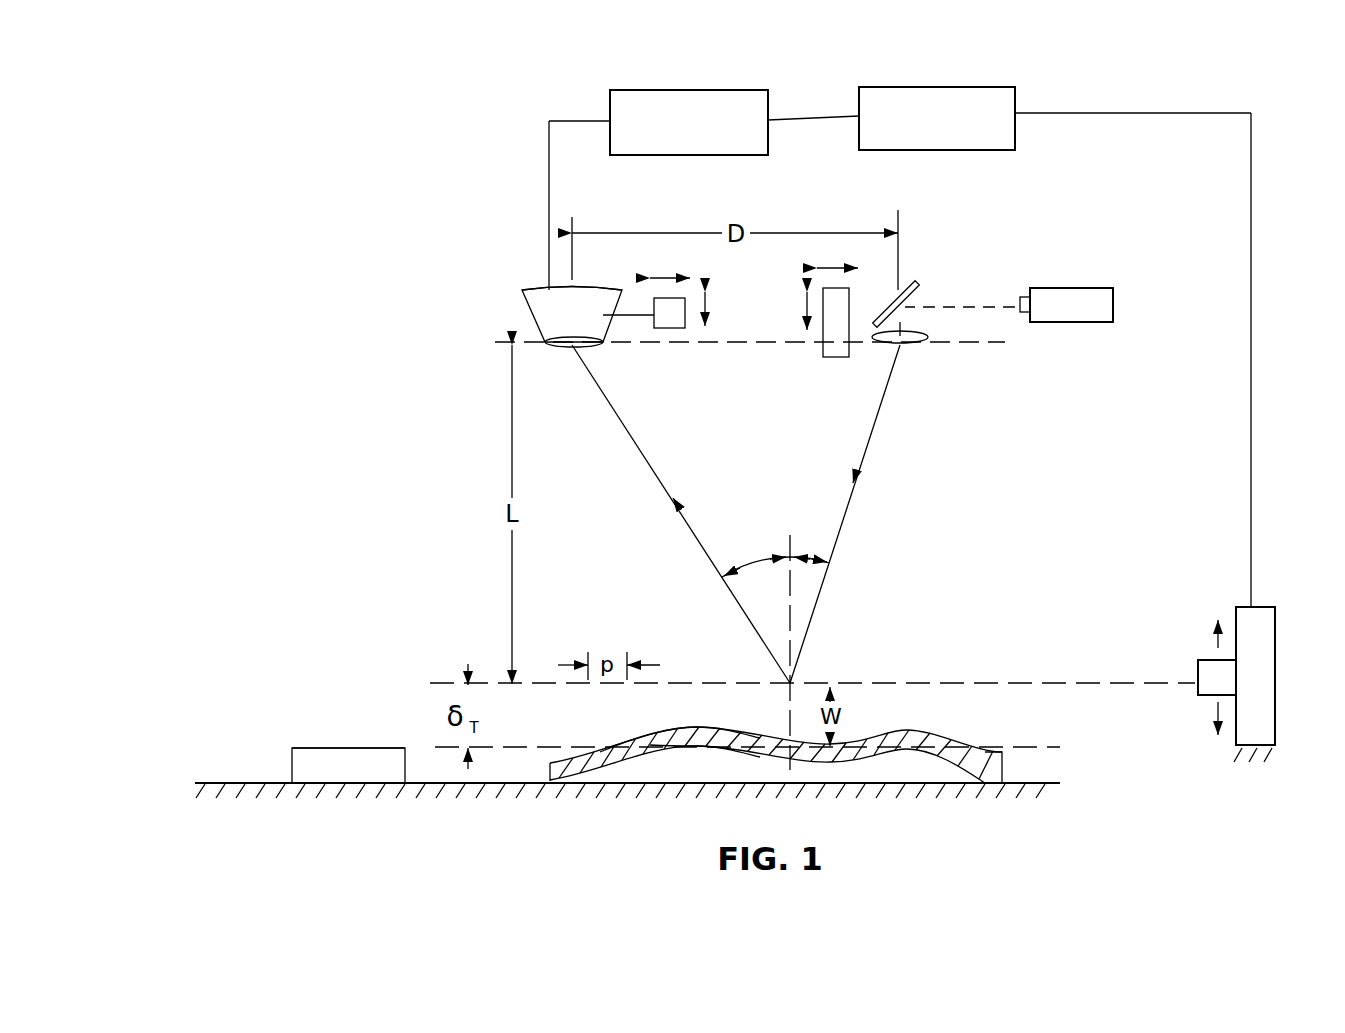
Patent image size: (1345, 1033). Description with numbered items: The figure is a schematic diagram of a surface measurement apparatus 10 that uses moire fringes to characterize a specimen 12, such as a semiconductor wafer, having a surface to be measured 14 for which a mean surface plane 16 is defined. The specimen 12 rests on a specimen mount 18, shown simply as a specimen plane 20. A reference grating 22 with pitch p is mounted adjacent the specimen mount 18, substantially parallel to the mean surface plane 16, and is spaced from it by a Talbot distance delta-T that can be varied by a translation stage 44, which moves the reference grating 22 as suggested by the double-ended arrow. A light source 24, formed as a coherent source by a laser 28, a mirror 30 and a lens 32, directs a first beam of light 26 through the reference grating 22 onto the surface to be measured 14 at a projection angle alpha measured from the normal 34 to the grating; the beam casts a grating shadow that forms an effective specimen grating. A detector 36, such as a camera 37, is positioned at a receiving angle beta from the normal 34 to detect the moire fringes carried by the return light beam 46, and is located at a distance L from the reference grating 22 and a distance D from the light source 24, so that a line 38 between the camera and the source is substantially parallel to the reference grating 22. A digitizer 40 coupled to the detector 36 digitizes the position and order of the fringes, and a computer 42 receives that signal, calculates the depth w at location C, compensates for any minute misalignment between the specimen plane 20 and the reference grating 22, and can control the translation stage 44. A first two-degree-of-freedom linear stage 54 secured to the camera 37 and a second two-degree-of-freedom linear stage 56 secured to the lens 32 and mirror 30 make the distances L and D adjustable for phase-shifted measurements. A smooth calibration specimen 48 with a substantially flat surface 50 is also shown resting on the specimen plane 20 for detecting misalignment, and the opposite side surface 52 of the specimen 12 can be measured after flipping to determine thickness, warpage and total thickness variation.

The surface measurement apparatus 10 is at (938, 524).
The specimen 12 is at (1002, 760).
The surface to be measured 14 is at (652, 730).
The mean surface plane 16 is at (440, 745).
The specimen mount 18 is at (1022, 775).
The specimen plane 20 is at (215, 780).
The reference grating 22 is at (1010, 678).
The light source 24 is at (995, 297).
The first beam of light 26 is at (870, 430).
The laser 28 is at (1113, 303).
The mirror 30 is at (918, 283).
The lens 32 is at (927, 341).
The normal 34 is at (787, 545).
The detector 36 is at (490, 281).
The camera 37 is at (543, 288).
The line 38 is at (745, 335).
The digitizer 40 is at (608, 100).
The computer 42 is at (1017, 95).
The translation stage 44 is at (1275, 642).
The return light beam 46 is at (648, 470).
The calibration specimen 48 is at (292, 760).
The substantially flat surface 50 is at (352, 748).
The opposite side surface 52 is at (697, 750).
The first 2-degree-of-freedom linear stage 54 is at (674, 330).
The second 2-degree-of-freedom linear stage 56 is at (832, 360).